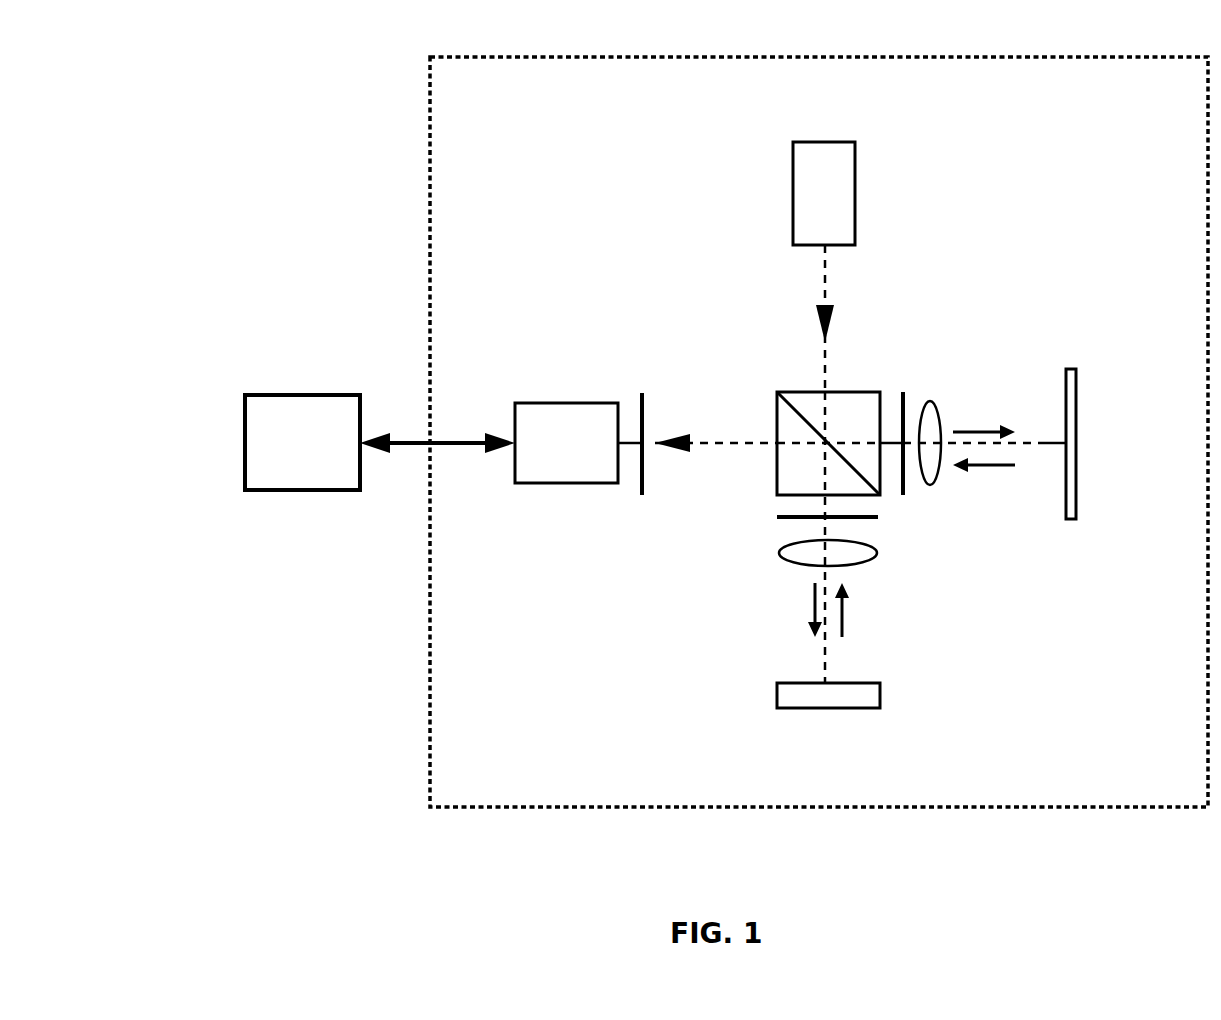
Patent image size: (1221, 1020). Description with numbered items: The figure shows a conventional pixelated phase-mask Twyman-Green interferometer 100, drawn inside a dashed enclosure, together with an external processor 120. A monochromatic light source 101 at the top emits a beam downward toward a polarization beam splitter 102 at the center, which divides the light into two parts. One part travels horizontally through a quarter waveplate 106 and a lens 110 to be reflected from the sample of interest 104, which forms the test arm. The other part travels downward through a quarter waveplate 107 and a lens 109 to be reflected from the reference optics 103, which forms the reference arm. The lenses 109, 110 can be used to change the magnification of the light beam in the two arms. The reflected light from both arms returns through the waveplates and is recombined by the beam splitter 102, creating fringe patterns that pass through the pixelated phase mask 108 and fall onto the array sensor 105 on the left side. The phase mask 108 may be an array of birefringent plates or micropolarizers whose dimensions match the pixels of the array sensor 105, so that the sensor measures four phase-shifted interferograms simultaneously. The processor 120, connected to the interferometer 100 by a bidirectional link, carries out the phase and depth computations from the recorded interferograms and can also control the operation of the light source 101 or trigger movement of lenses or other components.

The pixelated phase-mask Twyman-Green interferometer 100 is at (819, 432).
The monochromatic light source 101 is at (855, 172).
The polarization beam splitter 102 is at (807, 392).
The reference optics 103 is at (880, 693).
The sample of interest 104 is at (1077, 400).
The array sensor 105 is at (512, 468).
The quarter waveplate 106 is at (905, 495).
The quarter waveplate 107 is at (777, 520).
The pixelated phase mask 108 is at (640, 490).
The lens 109 is at (870, 562).
The lens 110 is at (930, 400).
The processor 120 is at (245, 412).